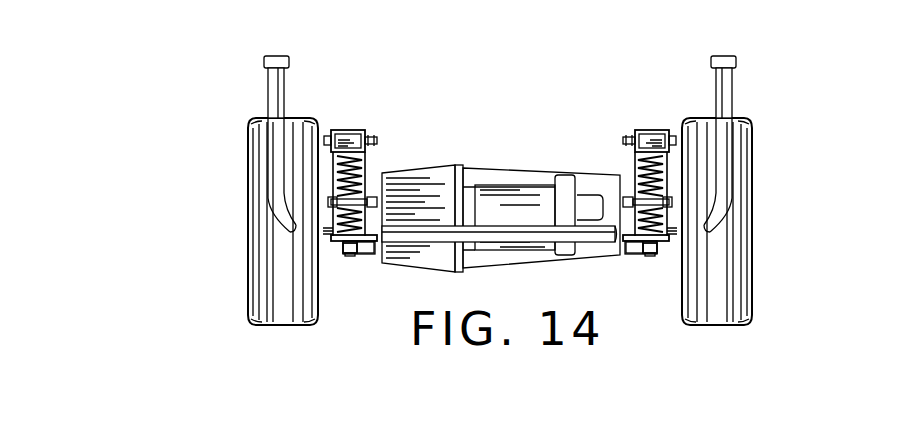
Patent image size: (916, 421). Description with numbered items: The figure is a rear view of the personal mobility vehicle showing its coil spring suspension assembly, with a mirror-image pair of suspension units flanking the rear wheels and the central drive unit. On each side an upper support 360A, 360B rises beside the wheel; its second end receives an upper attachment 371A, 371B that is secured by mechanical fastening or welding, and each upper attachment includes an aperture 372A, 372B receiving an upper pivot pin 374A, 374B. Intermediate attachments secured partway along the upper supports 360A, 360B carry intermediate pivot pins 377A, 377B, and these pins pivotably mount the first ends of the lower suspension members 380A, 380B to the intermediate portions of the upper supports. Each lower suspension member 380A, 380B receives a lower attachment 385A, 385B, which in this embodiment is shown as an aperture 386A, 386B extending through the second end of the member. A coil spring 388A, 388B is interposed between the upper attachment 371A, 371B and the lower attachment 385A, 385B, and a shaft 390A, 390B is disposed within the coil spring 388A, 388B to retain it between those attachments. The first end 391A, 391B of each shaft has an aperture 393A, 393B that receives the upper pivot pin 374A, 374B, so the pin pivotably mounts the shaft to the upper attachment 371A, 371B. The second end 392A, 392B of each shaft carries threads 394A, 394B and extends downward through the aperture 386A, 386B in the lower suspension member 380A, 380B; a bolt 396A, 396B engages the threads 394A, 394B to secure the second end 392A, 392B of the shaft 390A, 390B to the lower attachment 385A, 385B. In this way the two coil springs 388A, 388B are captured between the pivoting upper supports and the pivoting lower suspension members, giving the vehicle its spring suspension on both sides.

The upper support 360A is at (665, 160).
The upper support 360B is at (340, 158).
The upper attachment 371A is at (649, 130).
The upper attachment 371B is at (351, 130).
The aperture 372A is at (654, 134).
The aperture 372B is at (346, 134).
The upper pivot pin 374A is at (625, 141).
The upper pivot pin 374B is at (378, 141).
The intermediate pivot pin 377A is at (628, 196).
The intermediate pivot pin 377B is at (371, 196).
The lower suspension member 380A is at (666, 242).
The lower suspension member 380B is at (336, 242).
The lower attachment 385A is at (658, 247).
The lower attachment 385B is at (343, 247).
The aperture 386A is at (657, 251).
The aperture 386B is at (345, 251).
The coil spring 388A is at (662, 178).
The coil spring 388B is at (340, 178).
The shaft 390A is at (662, 203).
The shaft 390B is at (340, 203).
The first end of shaft 391A is at (662, 168).
The first end of shaft 391B is at (340, 168).
The second end of shaft 392A is at (662, 221).
The second end of shaft 392B is at (340, 221).
The aperture 393A is at (628, 136).
The aperture 393B is at (372, 136).
The threads 394A is at (651, 256).
The threads 394B is at (347, 256).
The bolt 396A is at (641, 254).
The bolt 396B is at (366, 253).